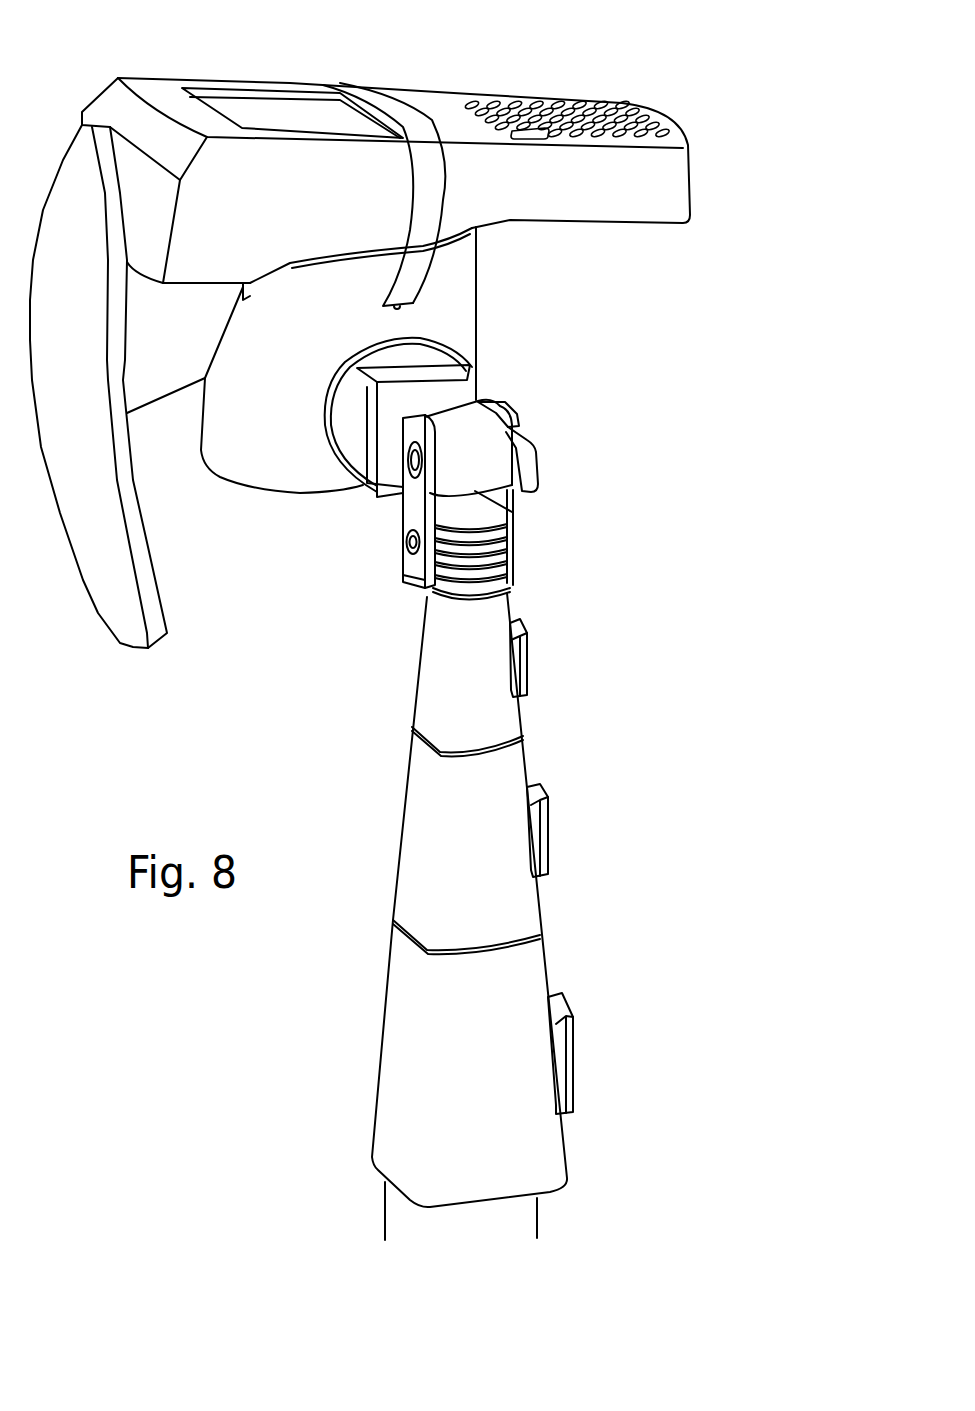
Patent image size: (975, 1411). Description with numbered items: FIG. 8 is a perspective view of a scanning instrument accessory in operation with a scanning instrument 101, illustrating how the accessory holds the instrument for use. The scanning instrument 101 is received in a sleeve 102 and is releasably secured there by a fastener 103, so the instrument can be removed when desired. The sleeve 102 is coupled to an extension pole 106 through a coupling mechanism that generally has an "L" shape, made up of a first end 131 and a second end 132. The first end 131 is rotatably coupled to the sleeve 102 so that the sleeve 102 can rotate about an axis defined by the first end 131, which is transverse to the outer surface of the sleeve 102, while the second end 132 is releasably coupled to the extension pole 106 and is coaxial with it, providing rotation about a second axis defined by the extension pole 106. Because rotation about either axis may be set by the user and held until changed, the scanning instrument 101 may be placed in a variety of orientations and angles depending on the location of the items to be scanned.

The scanning instrument 101 is at (237, 193).
The sleeve 102 is at (445, 291).
The fastener 103 is at (423, 150).
The extension pole 106 is at (424, 1224).
The first end 131 is at (413, 432).
The second end 132 is at (460, 533).